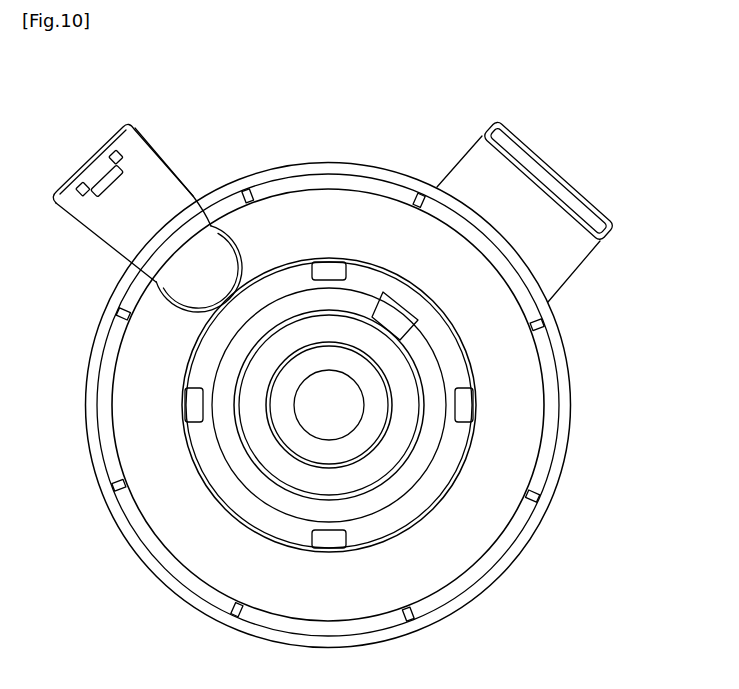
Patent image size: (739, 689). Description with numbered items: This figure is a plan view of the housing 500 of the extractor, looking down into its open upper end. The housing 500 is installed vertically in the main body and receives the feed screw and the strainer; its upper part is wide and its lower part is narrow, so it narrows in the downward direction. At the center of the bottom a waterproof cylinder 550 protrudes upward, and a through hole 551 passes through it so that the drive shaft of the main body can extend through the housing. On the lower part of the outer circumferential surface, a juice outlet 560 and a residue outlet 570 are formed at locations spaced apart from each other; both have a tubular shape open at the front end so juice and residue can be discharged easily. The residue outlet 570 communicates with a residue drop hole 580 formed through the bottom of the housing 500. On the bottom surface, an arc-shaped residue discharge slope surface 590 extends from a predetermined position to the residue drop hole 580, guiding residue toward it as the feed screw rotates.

The housing 500 is at (535, 537).
The waterproof cylinder 550 is at (398, 434).
The through hole 551 is at (327, 408).
The juice outlet 560 is at (107, 142).
The residue outlet 570 is at (570, 187).
The residue drop hole 580 is at (395, 313).
The residue discharge slope surface 590 is at (392, 487).